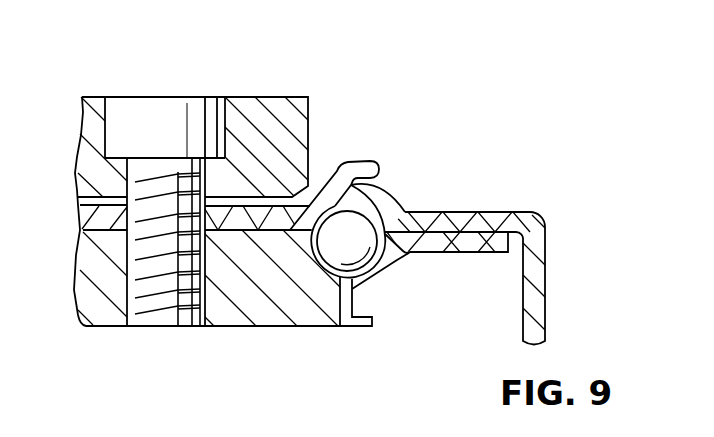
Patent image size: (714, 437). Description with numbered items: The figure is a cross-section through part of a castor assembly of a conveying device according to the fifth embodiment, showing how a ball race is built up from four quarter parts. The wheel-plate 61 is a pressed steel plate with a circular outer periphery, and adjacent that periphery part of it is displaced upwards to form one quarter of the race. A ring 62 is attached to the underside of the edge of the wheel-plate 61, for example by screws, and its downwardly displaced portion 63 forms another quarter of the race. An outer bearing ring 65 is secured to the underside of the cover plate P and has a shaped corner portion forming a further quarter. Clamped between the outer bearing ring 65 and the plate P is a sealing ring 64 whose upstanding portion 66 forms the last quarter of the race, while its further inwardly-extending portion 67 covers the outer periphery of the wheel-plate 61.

The plate P is at (259, 110).
The wheel-plate 61 is at (515, 220).
The ring 62 is at (447, 244).
The downwardly displaced portion 63 is at (380, 276).
The sealing ring 64 is at (247, 222).
The outer bearing ring 65 is at (300, 313).
The upstanding portion 66 is at (334, 160).
The inwardly-extending portion 67 is at (372, 166).